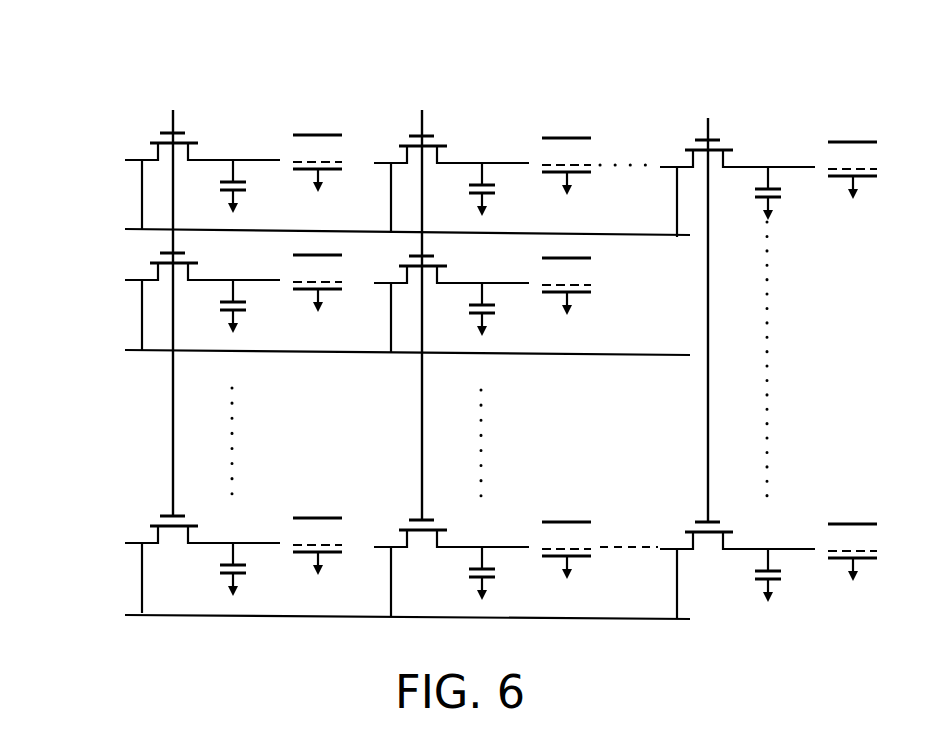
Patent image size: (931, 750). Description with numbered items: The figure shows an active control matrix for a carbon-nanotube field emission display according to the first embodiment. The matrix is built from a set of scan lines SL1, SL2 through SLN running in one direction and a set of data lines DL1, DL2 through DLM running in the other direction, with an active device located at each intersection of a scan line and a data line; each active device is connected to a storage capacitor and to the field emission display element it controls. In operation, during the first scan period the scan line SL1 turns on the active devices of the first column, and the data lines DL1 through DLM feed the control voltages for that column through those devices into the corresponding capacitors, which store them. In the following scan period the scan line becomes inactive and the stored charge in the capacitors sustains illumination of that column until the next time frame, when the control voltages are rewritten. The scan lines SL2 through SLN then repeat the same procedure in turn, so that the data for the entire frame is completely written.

The scan line SL1 is at (174, 289).
The scan line SL2 is at (424, 292).
The scan line SLN is at (713, 294).
The data line DL1 is at (459, 185).
The data line DL2 is at (366, 304).
The data line DLM is at (459, 567).